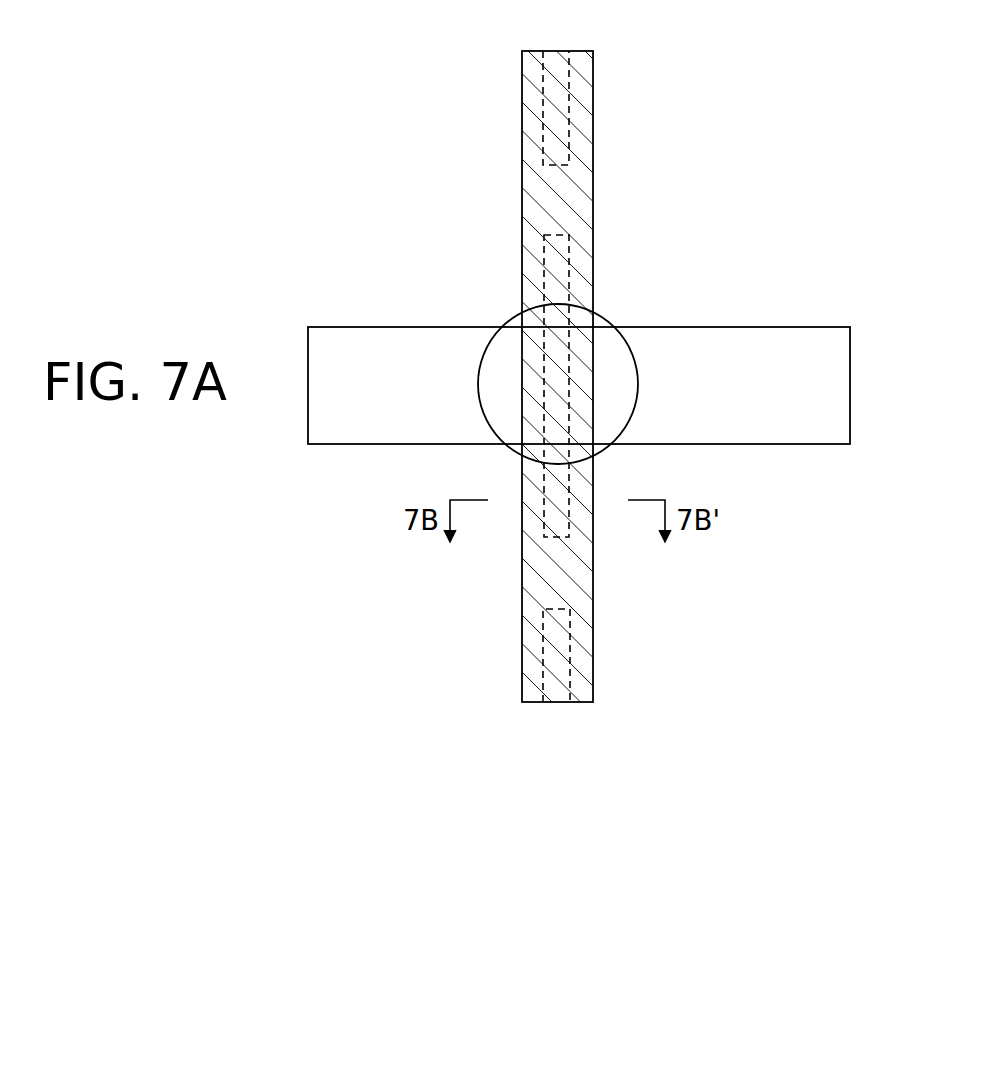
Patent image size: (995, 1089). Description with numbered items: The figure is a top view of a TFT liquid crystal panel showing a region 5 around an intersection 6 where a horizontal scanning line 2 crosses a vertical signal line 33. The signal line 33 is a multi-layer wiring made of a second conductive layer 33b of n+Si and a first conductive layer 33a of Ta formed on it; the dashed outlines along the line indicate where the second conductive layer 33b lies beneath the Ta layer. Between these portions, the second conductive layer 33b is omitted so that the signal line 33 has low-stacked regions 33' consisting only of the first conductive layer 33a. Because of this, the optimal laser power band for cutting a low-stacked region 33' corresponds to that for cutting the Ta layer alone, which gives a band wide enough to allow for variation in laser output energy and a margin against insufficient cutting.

The scanning line 2 is at (797, 327).
The region 5 is at (764, 176).
The intersection 6 is at (600, 314).
The signal line 33 is at (557, 386).
The low-stacked region 33' is at (603, 376).
The first conductive layer 33a is at (580, 535).
The second conductive layer 33b is at (593, 80).